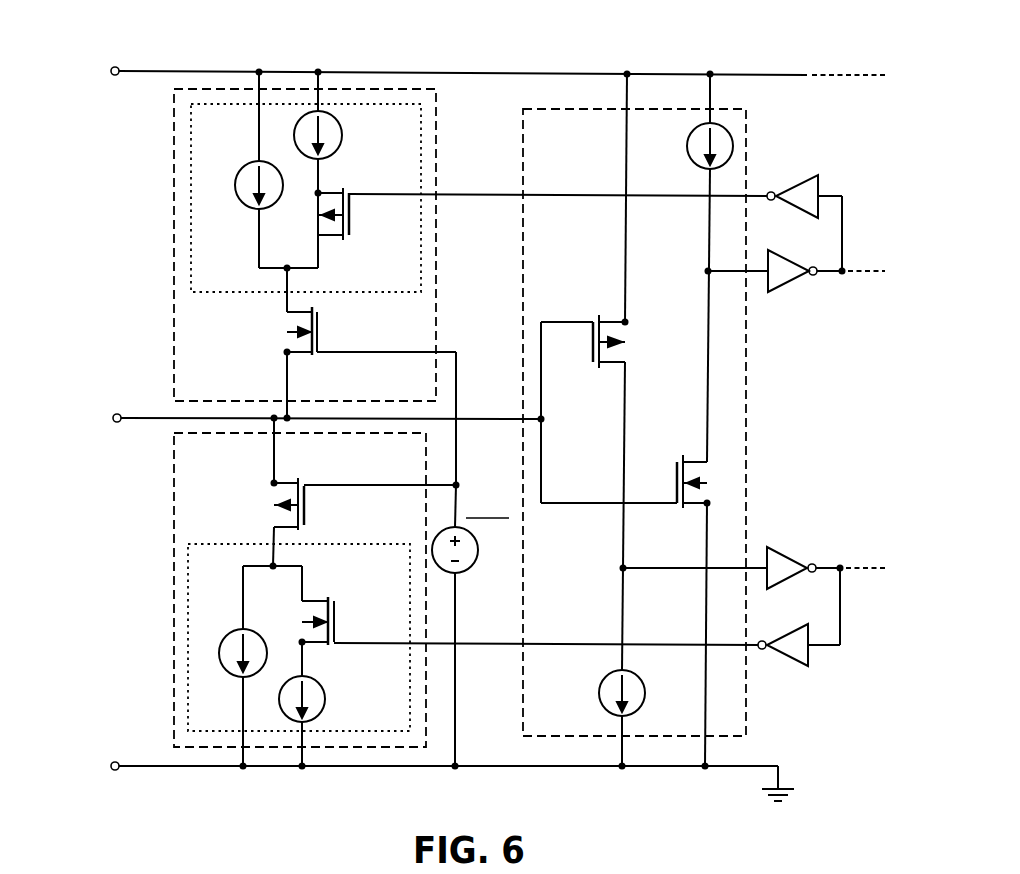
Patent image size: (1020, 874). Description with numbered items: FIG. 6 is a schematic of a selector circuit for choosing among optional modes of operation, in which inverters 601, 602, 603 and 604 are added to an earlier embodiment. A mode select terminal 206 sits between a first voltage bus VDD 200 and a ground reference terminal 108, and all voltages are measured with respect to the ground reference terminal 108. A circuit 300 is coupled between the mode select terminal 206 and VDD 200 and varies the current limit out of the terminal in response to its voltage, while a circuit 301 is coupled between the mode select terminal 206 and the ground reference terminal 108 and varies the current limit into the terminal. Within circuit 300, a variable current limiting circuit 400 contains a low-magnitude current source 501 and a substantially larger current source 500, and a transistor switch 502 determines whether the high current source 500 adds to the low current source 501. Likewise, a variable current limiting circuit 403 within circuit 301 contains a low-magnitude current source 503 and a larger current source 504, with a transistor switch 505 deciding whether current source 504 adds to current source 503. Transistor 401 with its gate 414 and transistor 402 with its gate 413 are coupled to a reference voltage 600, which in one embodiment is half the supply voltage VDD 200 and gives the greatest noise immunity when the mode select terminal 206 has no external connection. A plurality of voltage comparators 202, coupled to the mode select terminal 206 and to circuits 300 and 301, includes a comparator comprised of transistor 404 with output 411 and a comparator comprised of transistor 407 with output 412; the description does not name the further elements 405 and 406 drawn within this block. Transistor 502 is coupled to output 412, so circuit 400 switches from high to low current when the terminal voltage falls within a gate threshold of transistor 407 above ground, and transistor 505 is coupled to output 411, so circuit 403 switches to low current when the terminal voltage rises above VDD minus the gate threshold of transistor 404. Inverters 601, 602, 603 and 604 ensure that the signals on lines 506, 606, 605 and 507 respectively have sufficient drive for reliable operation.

The VDD terminal 200 is at (115, 62).
The mode select terminal 206 is at (115, 402).
The ground reference terminal 108 is at (116, 750).
The circuit 300 is at (173, 203).
The circuit 301 is at (168, 522).
The variable current limiting circuit 400 is at (224, 297).
The transistor 401 is at (277, 323).
The transistor 402 is at (260, 508).
The variable current limiting circuit 403 is at (213, 538).
The transistor 404 is at (583, 352).
The lower bias current source 405 is at (587, 698).
The upper bias current source 406 is at (678, 155).
The transistor 407 is at (668, 467).
The output 411 is at (612, 577).
The output 412 is at (695, 264).
The gate 413 is at (382, 490).
The gate 414 is at (390, 346).
The current source 500 is at (351, 140).
The current source 501 is at (231, 197).
The transistor switch 502 is at (357, 224).
The current source 503 is at (218, 667).
The current source 504 is at (330, 707).
The transistor switch 505 is at (345, 612).
The line 506 is at (468, 204).
The line 507 is at (477, 648).
The reference voltage 600 is at (472, 575).
The inverter 601 is at (802, 178).
The inverter 602 is at (795, 293).
The inverter 603 is at (787, 547).
The inverter 604 is at (787, 667).
The line 605 is at (848, 580).
The line 606 is at (855, 258).
The voltage comparators 202 is at (522, 140).